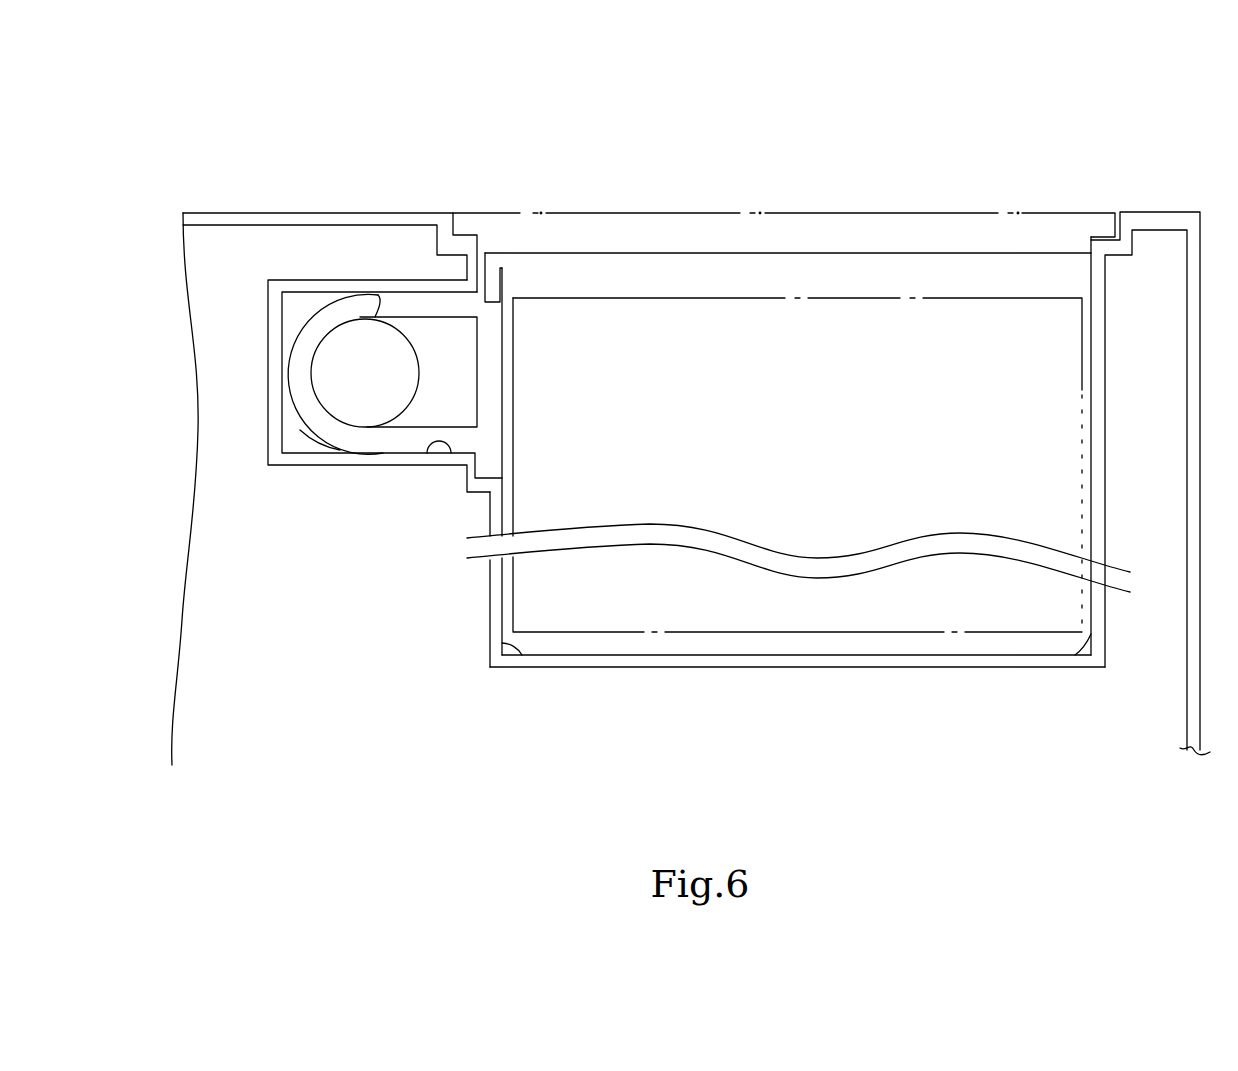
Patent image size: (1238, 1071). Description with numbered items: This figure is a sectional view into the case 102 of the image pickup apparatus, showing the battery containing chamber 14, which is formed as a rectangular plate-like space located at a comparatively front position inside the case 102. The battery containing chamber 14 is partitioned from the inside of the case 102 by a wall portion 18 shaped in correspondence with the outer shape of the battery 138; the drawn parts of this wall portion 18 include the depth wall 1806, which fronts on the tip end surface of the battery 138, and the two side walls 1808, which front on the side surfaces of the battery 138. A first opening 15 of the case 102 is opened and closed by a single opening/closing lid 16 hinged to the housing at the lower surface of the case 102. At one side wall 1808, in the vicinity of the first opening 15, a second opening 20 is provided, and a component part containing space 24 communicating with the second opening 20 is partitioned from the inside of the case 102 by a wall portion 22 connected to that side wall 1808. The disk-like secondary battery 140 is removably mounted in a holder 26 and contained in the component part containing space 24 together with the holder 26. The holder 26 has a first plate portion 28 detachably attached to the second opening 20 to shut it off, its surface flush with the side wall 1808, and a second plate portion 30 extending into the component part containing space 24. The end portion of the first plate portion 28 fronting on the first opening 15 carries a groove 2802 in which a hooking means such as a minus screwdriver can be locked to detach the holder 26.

The case 102 is at (203, 213).
The wall portion 22 is at (334, 283).
The component part containing space 24 is at (297, 302).
The holder 26 is at (417, 300).
The second plate portion 30 is at (320, 440).
The secondary battery 140 is at (416, 400).
The second opening 20 is at (438, 447).
The first plate portion 28 is at (505, 353).
The groove 2802 is at (494, 287).
The first opening 15 is at (680, 266).
The opening/closing lid 16 is at (1004, 212).
The battery containing chamber 14 is at (848, 342).
The battery 138 is at (808, 298).
The wall portion 18 is at (849, 514).
The depth wall 1806 is at (680, 655).
The side wall 1808 is at (502, 643).